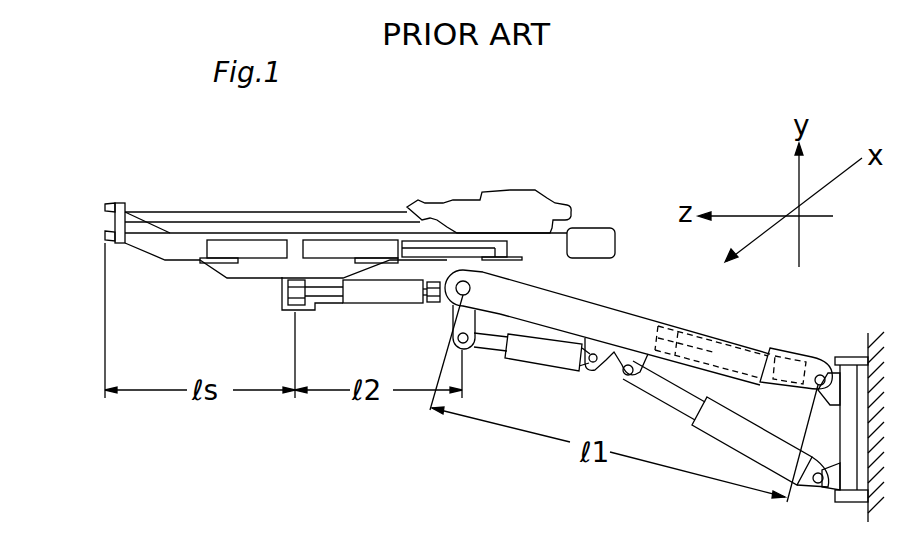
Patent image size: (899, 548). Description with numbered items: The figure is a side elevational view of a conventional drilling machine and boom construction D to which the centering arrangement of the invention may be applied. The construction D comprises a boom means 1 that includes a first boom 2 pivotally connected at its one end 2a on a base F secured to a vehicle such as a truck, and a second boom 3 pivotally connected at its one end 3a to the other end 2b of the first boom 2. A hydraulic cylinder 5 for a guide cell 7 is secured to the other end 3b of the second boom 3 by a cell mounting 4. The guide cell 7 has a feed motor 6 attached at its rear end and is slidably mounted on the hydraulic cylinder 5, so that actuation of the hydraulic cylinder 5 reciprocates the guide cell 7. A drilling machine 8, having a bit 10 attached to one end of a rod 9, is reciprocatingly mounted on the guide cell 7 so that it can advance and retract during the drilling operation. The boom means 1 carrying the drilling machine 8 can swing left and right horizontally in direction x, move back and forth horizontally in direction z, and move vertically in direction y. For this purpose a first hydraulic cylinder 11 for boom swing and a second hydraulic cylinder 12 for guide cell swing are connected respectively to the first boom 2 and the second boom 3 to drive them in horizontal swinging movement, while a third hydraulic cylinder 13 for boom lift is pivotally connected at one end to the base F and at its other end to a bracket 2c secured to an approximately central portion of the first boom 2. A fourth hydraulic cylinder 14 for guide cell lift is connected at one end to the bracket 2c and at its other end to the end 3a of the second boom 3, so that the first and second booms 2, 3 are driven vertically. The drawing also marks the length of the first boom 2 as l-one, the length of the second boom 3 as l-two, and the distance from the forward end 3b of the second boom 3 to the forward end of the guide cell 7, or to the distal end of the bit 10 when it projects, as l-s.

The boom means 1 is at (588, 299).
The first boom 2 is at (690, 340).
The one end of first boom 2a is at (792, 357).
The other end of first boom 2b is at (495, 285).
The bracket 2c is at (608, 370).
The second boom 3 is at (332, 303).
The one end of second boom 3a is at (435, 302).
The other end of second boom 3b is at (280, 305).
The cell mounting 4 is at (263, 270).
The hydraulic cylinder 5 is at (230, 250).
The feed motor 6 is at (600, 237).
The guide cell 7 is at (163, 248).
The drilling machine 8 is at (515, 202).
The rod 9 is at (265, 220).
The bit 10 is at (103, 212).
The first hydraulic cylinder 11 is at (740, 352).
The second hydraulic cylinder 12 is at (363, 303).
The third hydraulic cylinder 13 is at (700, 418).
The fourth hydraulic cylinder 14 is at (523, 355).
The drilling machine and boom construction D is at (572, 179).
The base F is at (838, 423).